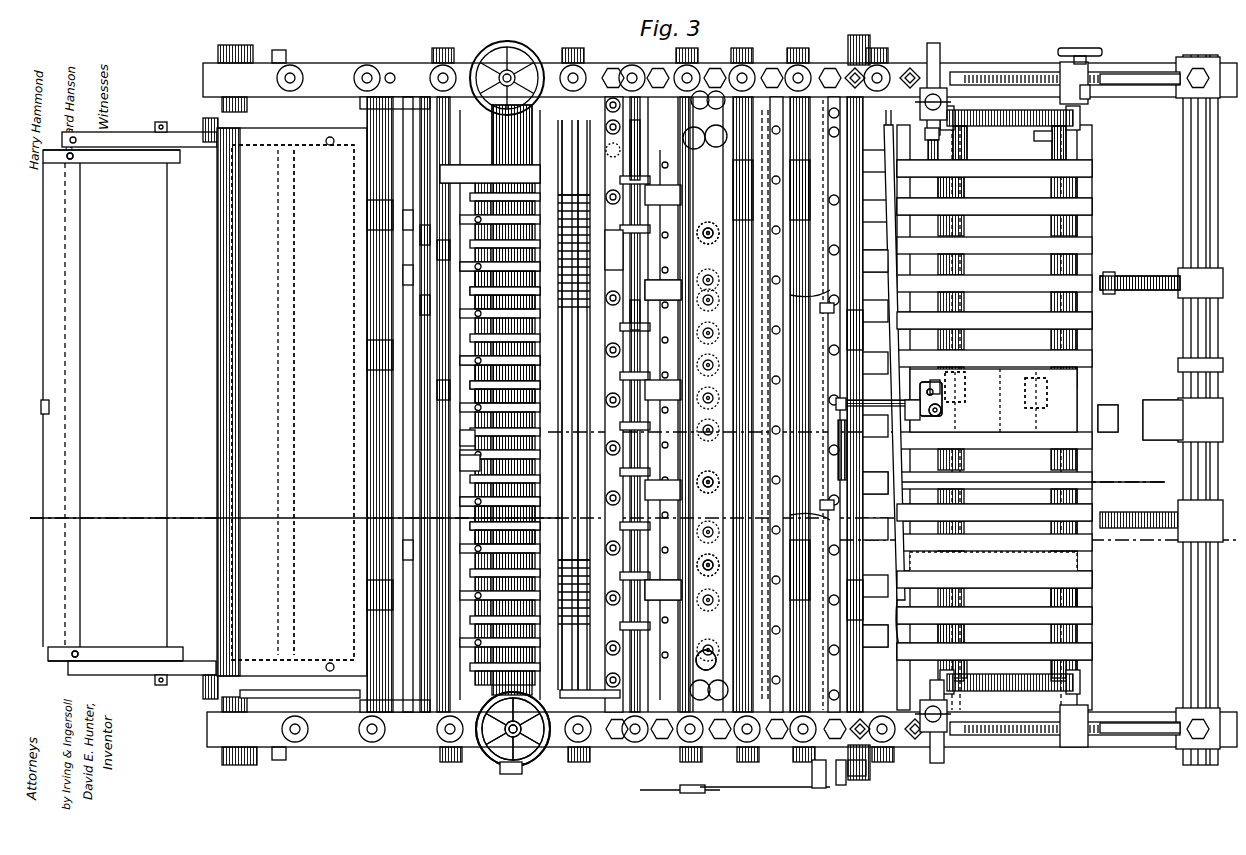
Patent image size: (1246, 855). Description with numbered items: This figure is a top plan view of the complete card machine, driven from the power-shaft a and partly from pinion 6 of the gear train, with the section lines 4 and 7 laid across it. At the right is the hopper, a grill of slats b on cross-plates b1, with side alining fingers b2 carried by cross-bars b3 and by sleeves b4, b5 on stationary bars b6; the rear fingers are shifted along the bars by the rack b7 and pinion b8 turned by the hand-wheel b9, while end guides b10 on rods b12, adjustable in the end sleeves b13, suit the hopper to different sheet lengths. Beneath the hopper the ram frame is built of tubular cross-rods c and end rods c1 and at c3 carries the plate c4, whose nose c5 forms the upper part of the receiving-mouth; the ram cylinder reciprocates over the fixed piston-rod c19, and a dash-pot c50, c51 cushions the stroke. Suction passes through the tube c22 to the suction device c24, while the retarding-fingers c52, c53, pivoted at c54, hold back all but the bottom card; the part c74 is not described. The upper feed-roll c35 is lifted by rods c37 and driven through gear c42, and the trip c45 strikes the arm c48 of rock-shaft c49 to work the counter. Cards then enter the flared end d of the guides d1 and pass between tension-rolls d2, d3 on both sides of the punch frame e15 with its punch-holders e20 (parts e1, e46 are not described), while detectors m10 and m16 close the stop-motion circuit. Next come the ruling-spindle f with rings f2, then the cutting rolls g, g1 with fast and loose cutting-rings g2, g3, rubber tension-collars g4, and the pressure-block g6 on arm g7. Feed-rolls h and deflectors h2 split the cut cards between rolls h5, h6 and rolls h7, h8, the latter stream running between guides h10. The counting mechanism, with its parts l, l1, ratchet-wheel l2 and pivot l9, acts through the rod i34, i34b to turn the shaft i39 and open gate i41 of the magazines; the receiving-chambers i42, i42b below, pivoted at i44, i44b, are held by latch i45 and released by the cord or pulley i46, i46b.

The pivot of upper receiving-chamber i44 is at (163, 126).
The pivot of upper receiving-chamber i44b is at (163, 686).
The receiving-chamber i42 is at (126, 154).
The receiving-chamber i42b is at (120, 655).
The cord or pulley i46 is at (69, 161).
The cord or pulley i46b is at (78, 650).
The latch i45 is at (44, 414).
The rod i34 is at (315, 704).
The rod i34b is at (540, 704).
The gate shaft i39 is at (360, 278).
The magazine gate i41 is at (300, 345).
The section line 4 4 is at (422, 783).
The section line 7 is at (1035, 483).
The pinion 6 is at (500, 766).
The lower cutting roll g1 is at (515, 778).
The ratchet-wheel l2 is at (640, 790).
The pivot of rod l9 is at (680, 792).
The lever rod l1 is at (757, 788).
The power-shaft a is at (819, 790).
The lever arm l is at (842, 786).
The feed-roll gear c42 is at (866, 772).
The roll-raising rod c37 is at (870, 780).
The securing point of plate c3 is at (900, 746).
The end sleeve b13 is at (930, 780).
The end-guide rod b12 is at (946, 760).
The rack b7 is at (1030, 740).
The pinion b8 is at (1068, 748).
The hand-wheel b9 is at (1078, 50).
The adjustable sleeve b5 is at (1092, 90).
The stationary tube or bar b6 is at (1148, 738).
The end rod of ram c1 is at (1010, 692).
The cross-plate b1 is at (1052, 150).
The sleeve b4 is at (922, 134).
The end guide or standard b10 is at (934, 142).
The cross-rod of ram c is at (966, 614).
The cross-bar b3 is at (1093, 608).
The side alining finger b2 is at (1093, 575).
The hopper slat b is at (1008, 630).
The piston-rod c19 is at (1125, 290).
The dash-pot part c50 is at (1108, 432).
The dash-pot part c51 is at (1162, 440).
The retarding-finger c53 is at (935, 380).
The retarding-finger c52 is at (950, 432).
The pivot of retarding-fingers c54 is at (1030, 432).
The pin c74 is at (935, 393).
The suction device c24 is at (943, 410).
The suction tube c22 is at (918, 394).
The counter trip c45 is at (900, 400).
The rock-shaft arm c48 is at (840, 398).
The nose or separator c5 is at (905, 412).
The rock-shaft c49 is at (848, 462).
The end plate c4 is at (875, 439).
The upper primary feed-roll c35 is at (858, 625).
The insulated member m10 is at (834, 505).
The detector set m16 is at (830, 518).
The tension-roll d2 is at (620, 472).
The tension-roll d3 is at (640, 664).
The guide d1 is at (622, 290).
The flared open end d is at (625, 250).
The removable punch-holder e20 is at (710, 550).
The block e1 is at (660, 600).
The roller e46 is at (710, 480).
The punch frame e15 is at (706, 670).
The principal ruling-spindle f is at (580, 646).
The ruling-ring f2 is at (560, 570).
The upper cutting roll g is at (520, 382).
The pressure-block g6 is at (518, 176).
The arm g7 is at (535, 525).
The feed-ring or tension-collar g4 is at (440, 392).
The loose cutting-ring g3 is at (468, 438).
The fast cutting-ring g2 is at (470, 462).
The upper-stream feed-roll h7 is at (375, 212).
The upper-stream feed-roll h8 is at (405, 218).
The lower-stream feed-roll h6 is at (420, 232).
The lower-stream feed-roll h5 is at (440, 250).
The guide h10 is at (405, 550).
The deflector h2 is at (422, 330).
The feed-roll h is at (430, 588).